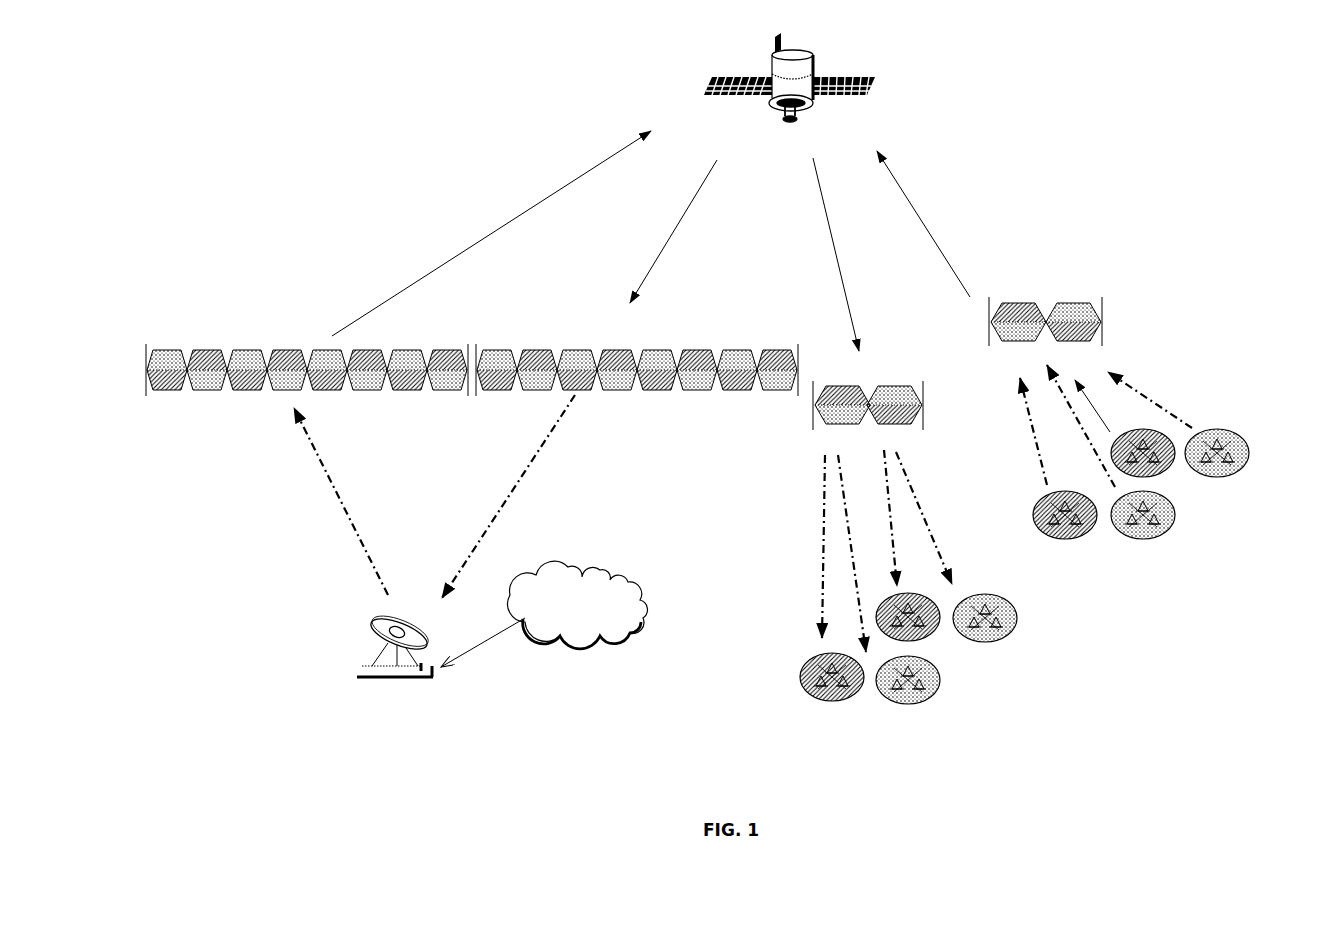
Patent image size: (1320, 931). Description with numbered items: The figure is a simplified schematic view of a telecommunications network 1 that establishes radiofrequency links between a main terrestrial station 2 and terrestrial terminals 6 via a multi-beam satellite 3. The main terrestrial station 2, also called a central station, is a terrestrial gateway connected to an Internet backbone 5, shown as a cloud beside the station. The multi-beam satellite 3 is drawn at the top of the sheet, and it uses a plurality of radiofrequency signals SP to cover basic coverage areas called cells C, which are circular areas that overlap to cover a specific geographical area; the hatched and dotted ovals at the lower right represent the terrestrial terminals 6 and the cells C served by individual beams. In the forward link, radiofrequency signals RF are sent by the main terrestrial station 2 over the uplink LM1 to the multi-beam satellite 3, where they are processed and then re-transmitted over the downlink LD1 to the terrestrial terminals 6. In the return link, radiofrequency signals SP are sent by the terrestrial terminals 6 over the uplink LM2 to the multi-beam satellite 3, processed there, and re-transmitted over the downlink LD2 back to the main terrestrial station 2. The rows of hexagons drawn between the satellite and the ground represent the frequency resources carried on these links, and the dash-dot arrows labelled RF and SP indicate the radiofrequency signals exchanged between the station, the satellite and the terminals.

The telecommunications network 1 is at (416, 148).
The main terrestrial station 2 is at (400, 680).
The multi-beam satellite 3 is at (772, 70).
The Internet backbone 5 is at (620, 632).
The terrestrial terminal 6 is at (813, 700).
The cell C is at (942, 683).
The uplink LM1 is at (491, 233).
The uplink LM2 is at (942, 224).
The downlink LD1 is at (822, 254).
The downlink LD2 is at (673, 231).
The radiofrequency signals RF is at (436, 496).
The radiofrequency signals SP is at (988, 502).